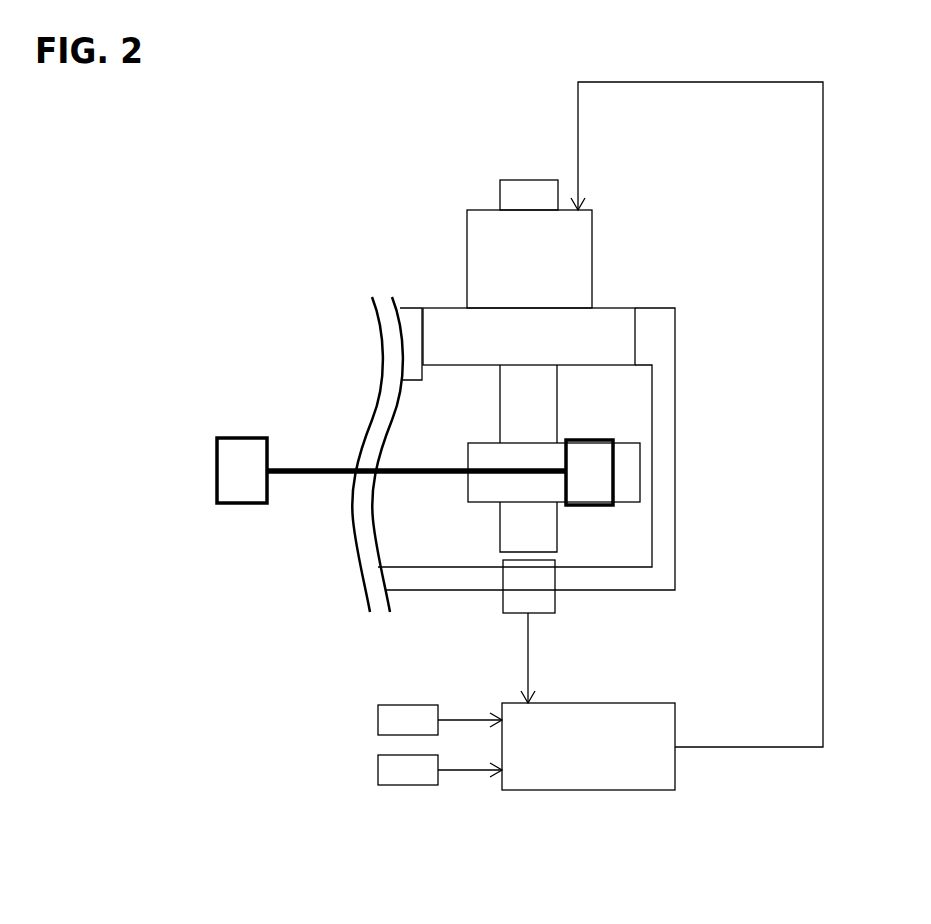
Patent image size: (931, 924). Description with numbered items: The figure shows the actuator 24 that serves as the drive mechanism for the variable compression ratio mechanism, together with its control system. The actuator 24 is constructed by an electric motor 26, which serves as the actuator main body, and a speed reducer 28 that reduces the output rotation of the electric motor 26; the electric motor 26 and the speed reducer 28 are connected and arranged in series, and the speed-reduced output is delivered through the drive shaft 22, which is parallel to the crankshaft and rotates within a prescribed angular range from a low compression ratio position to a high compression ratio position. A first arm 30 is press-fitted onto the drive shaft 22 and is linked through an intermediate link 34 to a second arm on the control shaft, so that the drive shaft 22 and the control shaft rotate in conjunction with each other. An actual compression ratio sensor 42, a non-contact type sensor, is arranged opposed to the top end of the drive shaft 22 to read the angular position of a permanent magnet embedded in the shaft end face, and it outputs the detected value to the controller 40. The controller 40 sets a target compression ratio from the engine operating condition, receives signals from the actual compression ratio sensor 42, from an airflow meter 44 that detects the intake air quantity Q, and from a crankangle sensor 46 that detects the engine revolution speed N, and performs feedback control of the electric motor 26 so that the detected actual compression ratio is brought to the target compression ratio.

The drive shaft 22 is at (543, 402).
The actuator 24 is at (677, 340).
The electric motor 26 is at (578, 265).
The speed reducer 28 is at (607, 335).
The first arm 30 is at (625, 468).
The intermediate link 34 is at (323, 477).
The controller 40 is at (622, 790).
The actual compression ratio sensor 42 is at (555, 602).
The airflow meter 44 is at (378, 718).
The crankangle sensor 46 is at (377, 772).